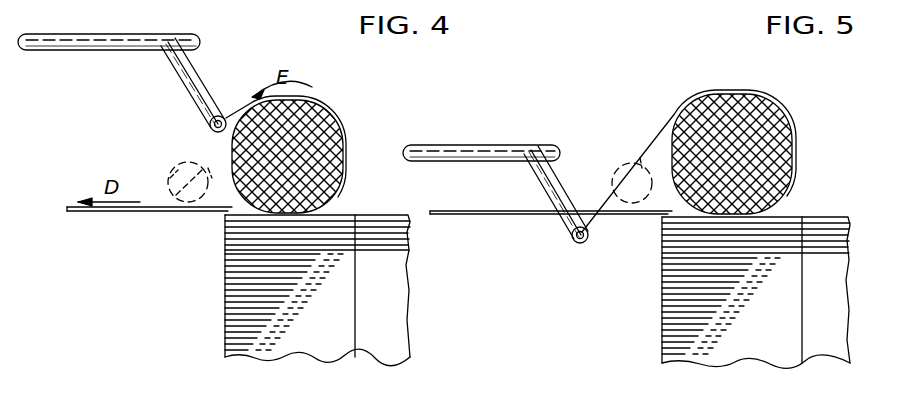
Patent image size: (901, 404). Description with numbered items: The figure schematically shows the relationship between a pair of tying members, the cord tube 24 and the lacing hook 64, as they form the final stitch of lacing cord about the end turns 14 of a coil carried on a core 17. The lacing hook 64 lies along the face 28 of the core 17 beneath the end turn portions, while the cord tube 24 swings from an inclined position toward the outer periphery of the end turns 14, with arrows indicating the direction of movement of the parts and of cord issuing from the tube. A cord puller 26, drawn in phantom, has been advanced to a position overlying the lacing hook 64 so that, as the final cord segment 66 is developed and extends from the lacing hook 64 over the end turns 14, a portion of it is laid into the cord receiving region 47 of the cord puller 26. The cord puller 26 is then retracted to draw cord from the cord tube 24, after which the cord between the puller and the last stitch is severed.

In FIG. 4, the end turns 14 is at (332, 138).
In FIG. 5, the end turns 14 is at (732, 154).
In FIG. 4, the core 17 is at (317, 273).
In FIG. 5, the core 17 is at (756, 274).
In FIG. 4, the cord tube 24 is at (192, 76).
In FIG. 5, the cord tube 24 is at (534, 176).
In FIG. 4, the cord puller 26 is at (210, 170).
In FIG. 5, the cord puller 26 is at (641, 158).
In FIG. 4, the face 28 is at (350, 215).
In FIG. 5, the face 28 is at (794, 217).
In FIG. 4, the cord receiving region 47 is at (172, 167).
In FIG. 5, the cord receiving region 47 is at (619, 167).
In FIG. 4, the lacing hook 64 is at (135, 211).
In FIG. 5, the lacing hook 64 is at (472, 214).
In FIG. 5, the final cord segment 66 is at (668, 130).